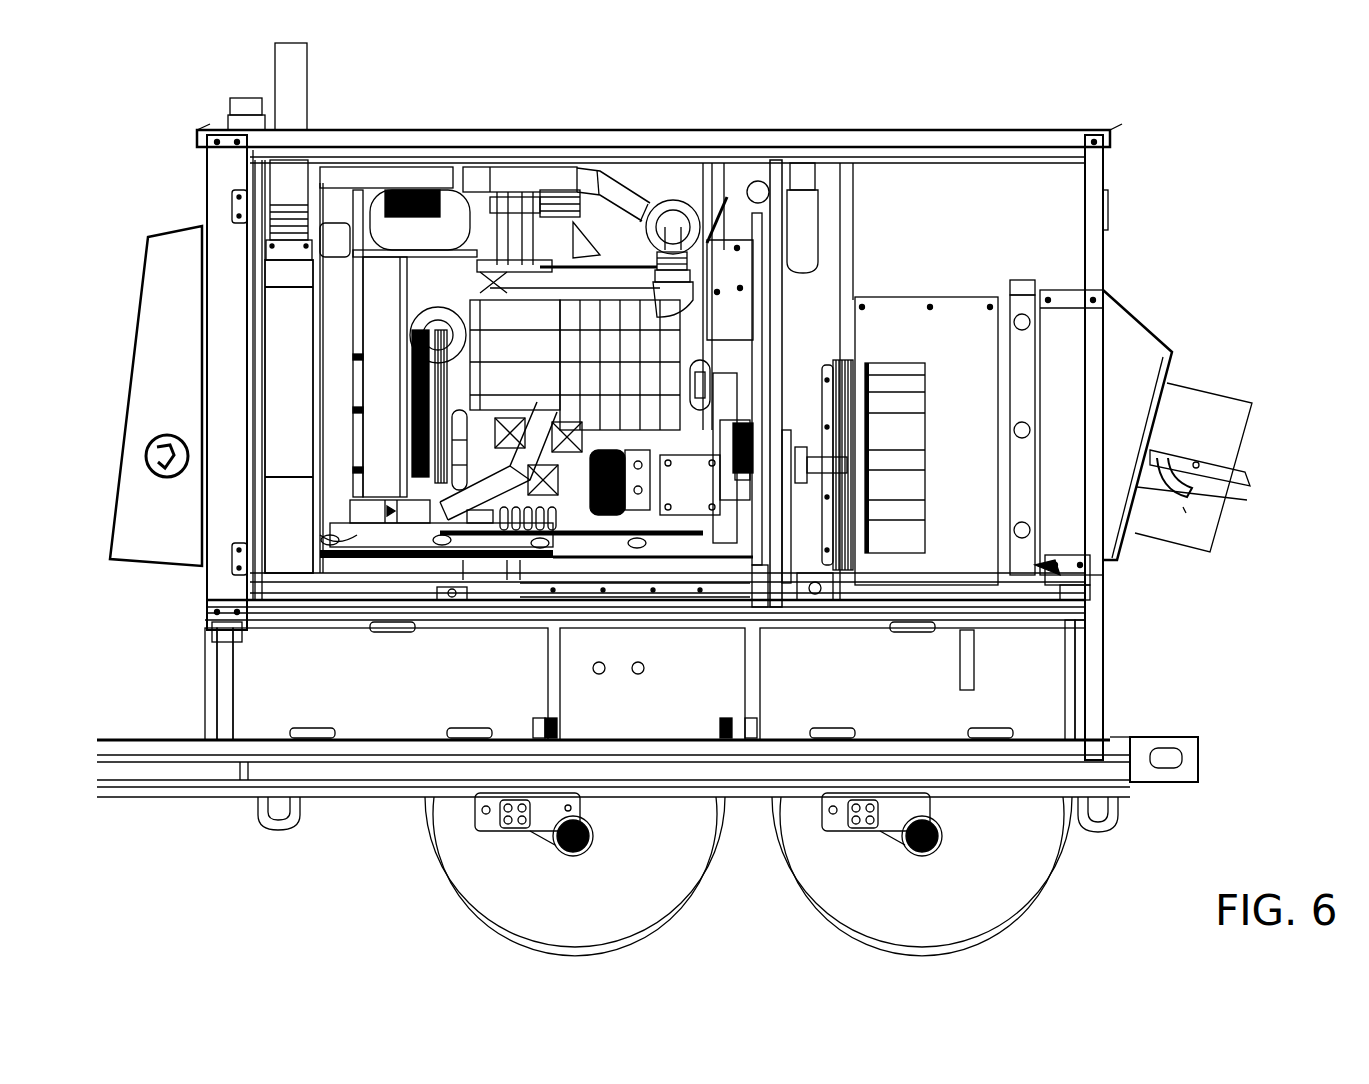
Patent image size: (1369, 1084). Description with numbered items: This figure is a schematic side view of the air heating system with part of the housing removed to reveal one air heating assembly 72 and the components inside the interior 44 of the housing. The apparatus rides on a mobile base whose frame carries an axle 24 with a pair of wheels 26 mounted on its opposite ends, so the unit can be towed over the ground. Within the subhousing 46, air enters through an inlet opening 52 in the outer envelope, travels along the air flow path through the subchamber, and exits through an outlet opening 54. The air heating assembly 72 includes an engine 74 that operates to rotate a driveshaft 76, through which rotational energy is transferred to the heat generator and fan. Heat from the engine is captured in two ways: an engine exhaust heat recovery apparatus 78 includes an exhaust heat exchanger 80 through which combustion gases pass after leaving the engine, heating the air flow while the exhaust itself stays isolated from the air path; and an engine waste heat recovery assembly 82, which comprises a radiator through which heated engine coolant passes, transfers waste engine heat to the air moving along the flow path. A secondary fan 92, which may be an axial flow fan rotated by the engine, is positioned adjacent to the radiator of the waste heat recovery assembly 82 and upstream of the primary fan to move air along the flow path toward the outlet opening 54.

The axle 24 is at (515, 837).
The wheels 26 is at (468, 920).
The interior 44 is at (927, 557).
The subhousing 46 is at (688, 720).
The inlet opening 52 is at (268, 373).
The outlet opening 54 is at (1167, 390).
The air heating assembly 72 is at (1045, 200).
The engine 74 is at (590, 295).
The driveshaft 76 is at (722, 410).
The engine exhaust heat recovery apparatus 78 is at (298, 268).
The exhaust heat exchanger 80 is at (312, 313).
The engine waste heat recovery assembly 82 is at (383, 460).
The secondary fan 92 is at (407, 467).